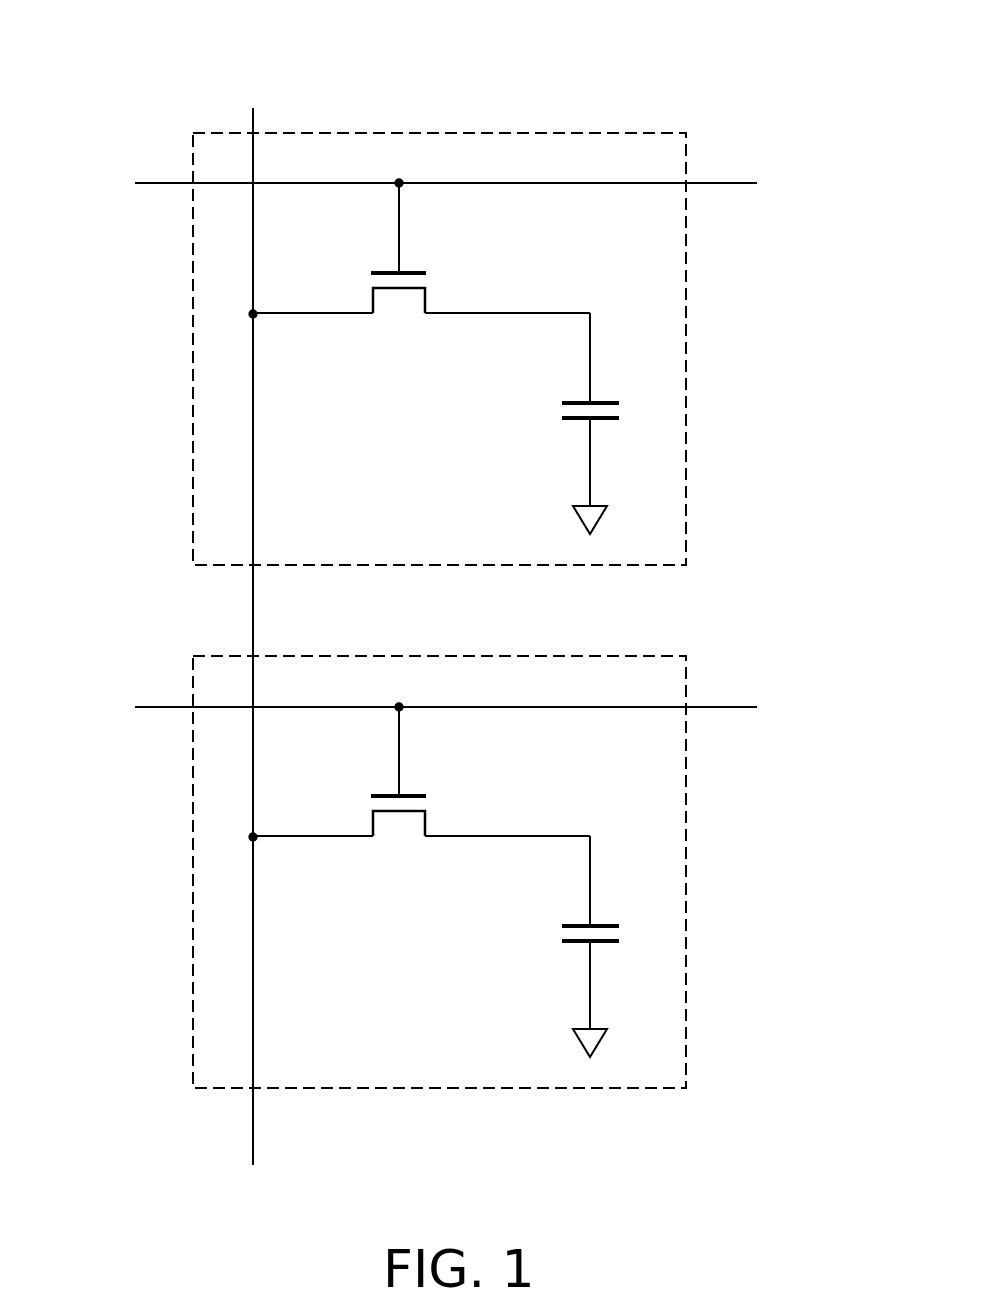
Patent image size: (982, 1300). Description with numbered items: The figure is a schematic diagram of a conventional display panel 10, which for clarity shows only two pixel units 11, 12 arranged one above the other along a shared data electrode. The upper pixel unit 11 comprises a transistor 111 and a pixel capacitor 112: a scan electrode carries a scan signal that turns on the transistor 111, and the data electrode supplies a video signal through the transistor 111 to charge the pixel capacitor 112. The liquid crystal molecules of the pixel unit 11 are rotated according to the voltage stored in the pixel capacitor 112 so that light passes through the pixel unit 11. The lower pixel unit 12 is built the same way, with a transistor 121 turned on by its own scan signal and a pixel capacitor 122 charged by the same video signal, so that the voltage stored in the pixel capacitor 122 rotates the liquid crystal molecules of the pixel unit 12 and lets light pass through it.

The conventional display panel 10 is at (752, 98).
The pixel unit 11 is at (686, 268).
The pixel unit 12 is at (686, 792).
The transistor 111 is at (399, 306).
The pixel capacitor 112 is at (605, 402).
The transistor 121 is at (399, 829).
The pixel capacitor 122 is at (605, 925).